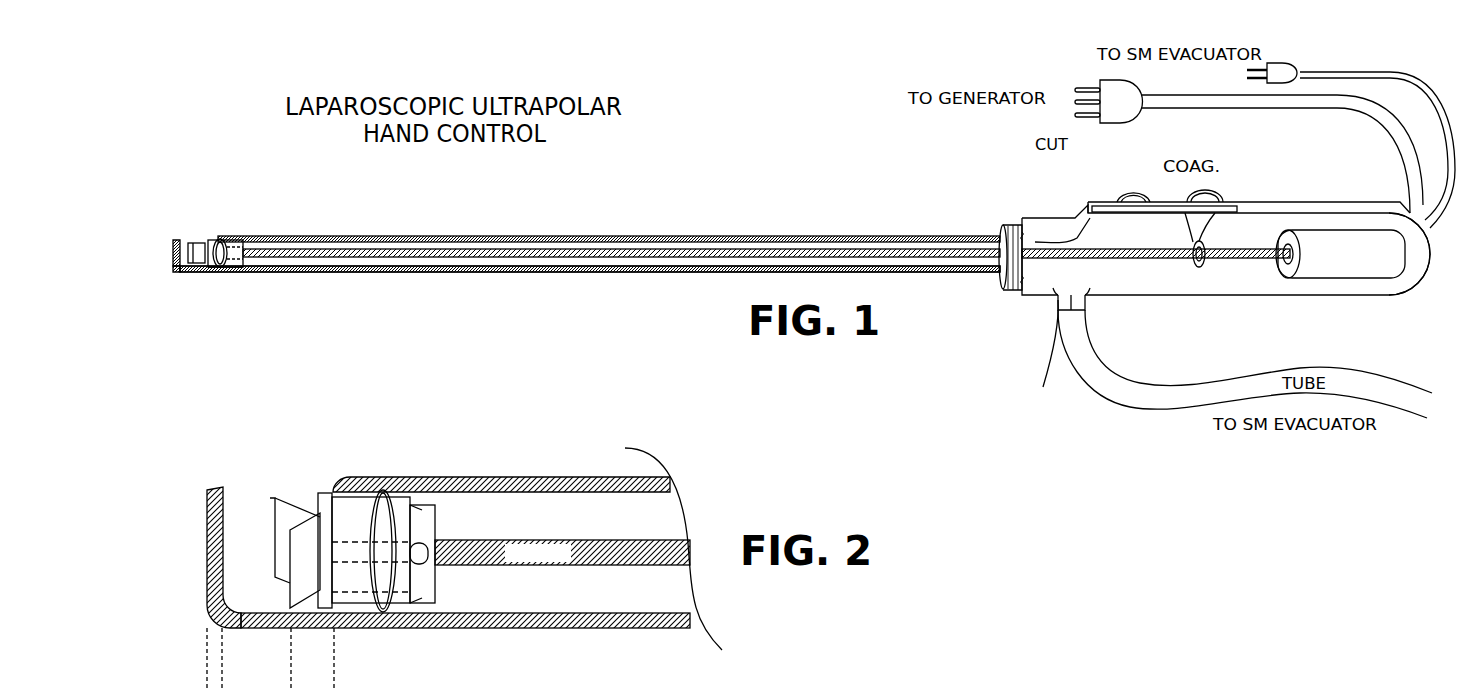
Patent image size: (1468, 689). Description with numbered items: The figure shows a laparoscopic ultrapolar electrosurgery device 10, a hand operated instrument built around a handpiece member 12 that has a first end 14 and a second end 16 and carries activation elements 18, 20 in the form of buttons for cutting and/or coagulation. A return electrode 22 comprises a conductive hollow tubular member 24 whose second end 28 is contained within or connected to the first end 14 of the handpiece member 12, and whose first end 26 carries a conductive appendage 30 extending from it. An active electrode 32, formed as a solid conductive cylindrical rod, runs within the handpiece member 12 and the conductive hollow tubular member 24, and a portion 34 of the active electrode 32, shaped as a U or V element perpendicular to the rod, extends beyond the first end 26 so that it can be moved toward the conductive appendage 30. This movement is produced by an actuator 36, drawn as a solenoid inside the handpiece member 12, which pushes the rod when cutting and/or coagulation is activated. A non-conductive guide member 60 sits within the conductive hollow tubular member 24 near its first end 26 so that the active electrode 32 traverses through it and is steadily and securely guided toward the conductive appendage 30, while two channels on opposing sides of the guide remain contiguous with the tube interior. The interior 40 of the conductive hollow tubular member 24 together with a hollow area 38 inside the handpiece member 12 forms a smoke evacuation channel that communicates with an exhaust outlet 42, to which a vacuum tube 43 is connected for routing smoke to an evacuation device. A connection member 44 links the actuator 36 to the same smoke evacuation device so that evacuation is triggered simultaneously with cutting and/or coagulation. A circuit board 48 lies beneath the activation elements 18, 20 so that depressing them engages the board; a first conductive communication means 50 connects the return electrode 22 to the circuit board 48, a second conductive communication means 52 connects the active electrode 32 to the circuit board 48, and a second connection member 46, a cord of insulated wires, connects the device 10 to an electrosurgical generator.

In FIG. 1, the laparoscopic ultrapolar electrosurgery device 10 is at (733, 131).
In FIG. 1, the handpiece member 12 is at (1040, 285).
In FIG. 1, the first end 14 is at (1000, 283).
In FIG. 1, the second end 16 is at (1430, 283).
In FIG. 1, the activation element 18 is at (1117, 194).
In FIG. 1, the activation element 20 is at (1218, 193).
In FIG. 1, the return electrode 22 is at (262, 274).
In FIG. 1, the conductive hollow tubular member 24 is at (495, 236).
In FIG. 2, the conductive hollow tubular member 24 is at (542, 477).
In FIG. 1, the first end 26 is at (215, 270).
In FIG. 1, the second end 28 is at (1022, 222).
In FIG. 1, the conductive appendage 30 is at (172, 253).
In FIG. 2, the conductive appendage 30 is at (205, 522).
In FIG. 1, the active electrode 32 is at (578, 256).
In FIG. 2, the active electrode 32 is at (600, 566).
In FIG. 1, the portion of the active electrode 34 is at (195, 243).
In FIG. 2, the portion of the active electrode 34 is at (275, 498).
In FIG. 1, the actuator 36 is at (1350, 277).
In FIG. 1, the hollow area 38 is at (1107, 275).
In FIG. 1, the interior of the conductive hollow tubular member 40 is at (783, 242).
In FIG. 1, the exhaust outlet 42 is at (1062, 330).
In FIG. 1, the vacuum tube 43 is at (1140, 396).
In FIG. 1, the connection member 44 is at (1370, 73).
In FIG. 1, the second connection member 46 is at (1325, 109).
In FIG. 1, the circuit board 48 is at (1160, 208).
In FIG. 1, the first conductive communication means 50 is at (1073, 240).
In FIG. 1, the second conductive communication means 52 is at (1200, 264).
In FIG. 1, the non-conductive guide member 60 is at (240, 240).
In FIG. 2, the non-conductive guide member 60 is at (410, 498).